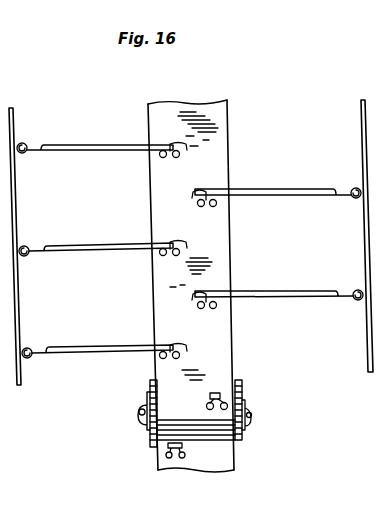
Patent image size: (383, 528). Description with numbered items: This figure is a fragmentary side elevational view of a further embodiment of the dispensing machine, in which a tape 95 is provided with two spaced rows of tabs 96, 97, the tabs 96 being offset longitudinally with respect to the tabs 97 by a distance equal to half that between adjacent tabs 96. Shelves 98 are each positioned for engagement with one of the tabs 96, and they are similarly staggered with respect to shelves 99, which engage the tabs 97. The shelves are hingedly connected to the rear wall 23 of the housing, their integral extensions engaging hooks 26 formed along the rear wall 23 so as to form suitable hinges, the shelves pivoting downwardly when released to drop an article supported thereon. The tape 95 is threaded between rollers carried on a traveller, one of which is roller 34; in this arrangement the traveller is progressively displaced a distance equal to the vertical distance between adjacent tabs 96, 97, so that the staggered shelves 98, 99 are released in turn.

The rear wall 23 is at (20, 310).
The hooks 26 is at (26, 154).
The roller 34 is at (153, 436).
The tape 95 is at (221, 132).
The tabs 96 is at (169, 152).
The tabs 97 is at (208, 208).
The shelves 98 is at (72, 345).
The shelves 99 is at (283, 290).